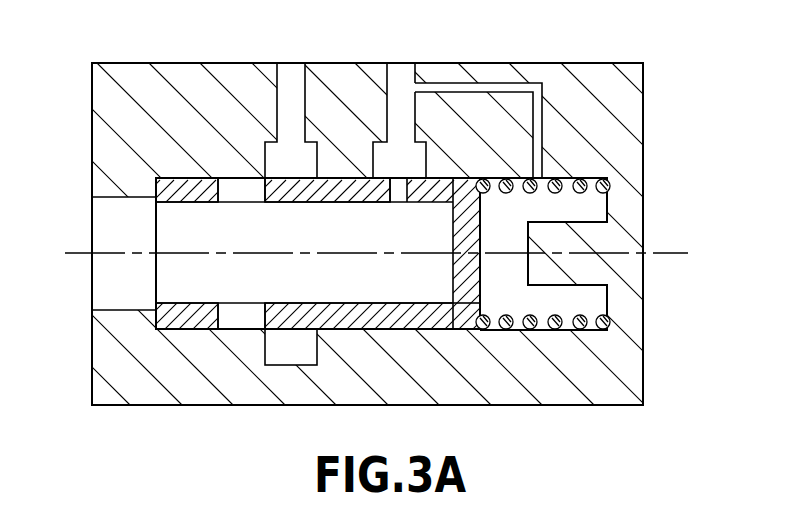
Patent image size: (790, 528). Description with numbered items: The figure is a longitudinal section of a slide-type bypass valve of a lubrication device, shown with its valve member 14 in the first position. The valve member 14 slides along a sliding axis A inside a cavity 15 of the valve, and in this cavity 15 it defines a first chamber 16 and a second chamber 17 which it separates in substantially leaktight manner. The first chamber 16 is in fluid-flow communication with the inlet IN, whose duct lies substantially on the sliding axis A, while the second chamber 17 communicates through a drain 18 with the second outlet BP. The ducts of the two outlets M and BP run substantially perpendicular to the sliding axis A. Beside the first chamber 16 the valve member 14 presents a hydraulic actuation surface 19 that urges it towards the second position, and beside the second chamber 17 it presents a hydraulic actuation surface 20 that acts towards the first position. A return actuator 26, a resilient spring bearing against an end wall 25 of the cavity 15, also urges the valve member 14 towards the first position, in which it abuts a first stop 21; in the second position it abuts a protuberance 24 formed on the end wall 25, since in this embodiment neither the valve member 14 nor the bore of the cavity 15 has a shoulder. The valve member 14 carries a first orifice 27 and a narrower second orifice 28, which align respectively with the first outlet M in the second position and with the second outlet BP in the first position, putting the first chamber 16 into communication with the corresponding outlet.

The valve member 14 is at (287, 310).
The cavity 15 is at (175, 169).
The first chamber 16 is at (312, 286).
The second chamber 17 is at (494, 248).
The drain 18 is at (523, 84).
The hydraulic actuation surface 19 is at (449, 282).
The hydraulic actuation surface 20 is at (491, 205).
The first stop 21 is at (165, 193).
The protuberance 24 is at (572, 275).
The end wall 25 is at (599, 206).
The return actuator 26 is at (578, 330).
The first orifice 27 is at (252, 197).
The second orifice 28 is at (398, 203).
The first outlet M is at (291, 70).
The second outlet BP is at (398, 67).
The inlet IN is at (103, 244).
The sliding axis A is at (671, 253).